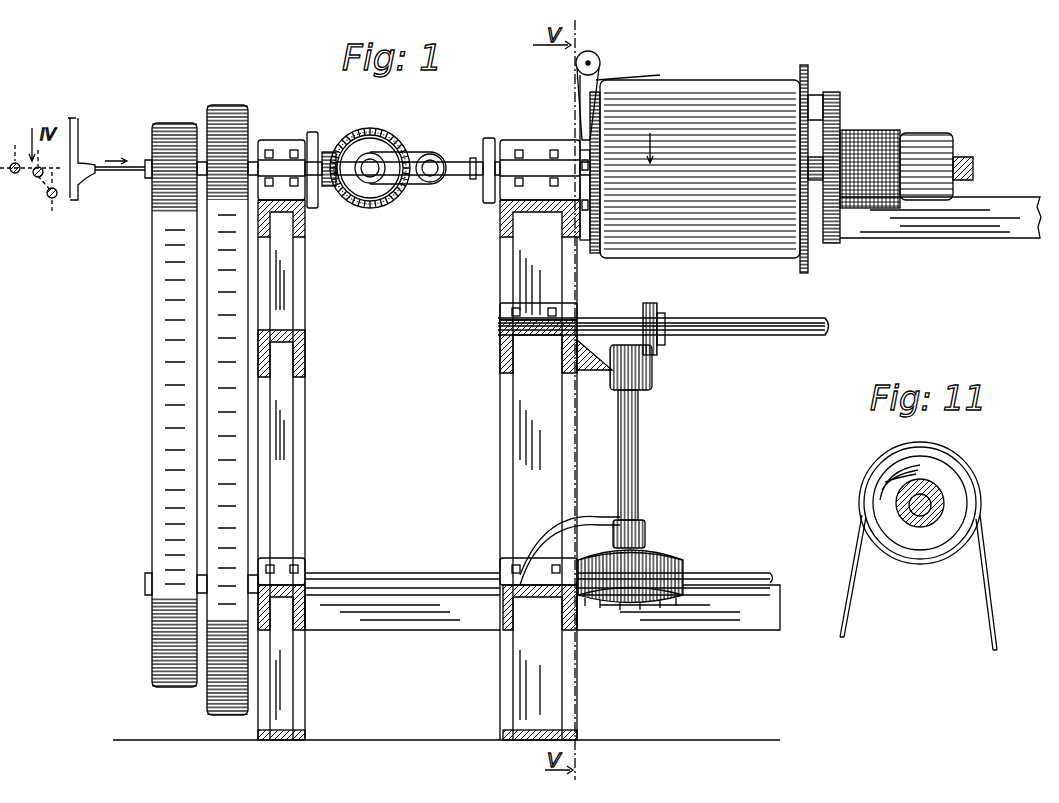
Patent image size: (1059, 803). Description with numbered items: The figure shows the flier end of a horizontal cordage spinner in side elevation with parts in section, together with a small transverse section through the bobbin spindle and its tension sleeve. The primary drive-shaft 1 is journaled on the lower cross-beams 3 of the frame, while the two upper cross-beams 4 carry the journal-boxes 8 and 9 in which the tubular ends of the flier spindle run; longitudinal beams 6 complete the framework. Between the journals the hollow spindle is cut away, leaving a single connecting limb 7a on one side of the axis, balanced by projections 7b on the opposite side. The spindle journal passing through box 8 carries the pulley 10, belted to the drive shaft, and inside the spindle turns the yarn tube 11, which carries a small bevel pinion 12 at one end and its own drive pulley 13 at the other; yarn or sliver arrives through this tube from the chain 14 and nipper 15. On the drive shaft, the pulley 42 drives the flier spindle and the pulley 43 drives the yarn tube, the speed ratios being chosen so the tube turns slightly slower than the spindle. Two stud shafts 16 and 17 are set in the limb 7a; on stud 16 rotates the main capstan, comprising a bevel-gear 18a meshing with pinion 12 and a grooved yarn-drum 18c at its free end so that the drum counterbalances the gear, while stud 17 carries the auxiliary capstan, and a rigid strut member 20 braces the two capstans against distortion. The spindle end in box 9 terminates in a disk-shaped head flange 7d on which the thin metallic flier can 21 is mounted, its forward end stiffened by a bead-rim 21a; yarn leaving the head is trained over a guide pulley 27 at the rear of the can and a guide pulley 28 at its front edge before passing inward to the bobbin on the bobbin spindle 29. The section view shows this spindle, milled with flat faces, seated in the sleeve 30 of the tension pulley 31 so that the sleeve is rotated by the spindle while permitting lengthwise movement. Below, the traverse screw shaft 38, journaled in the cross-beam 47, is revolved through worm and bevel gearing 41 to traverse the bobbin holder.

In FIG. 1, the primary drive-shaft 1 is at (360, 575).
In FIG. 1, the lower cross-beams 3 is at (305, 625).
In FIG. 1, the upper cross-beams 4 is at (303, 240).
In FIG. 1, the longitudinal beams 6 is at (1003, 238).
In FIG. 1, the connecting limb 7a is at (466, 174).
In FIG. 1, the projections 7b is at (312, 135).
In FIG. 1, the head flange 7d is at (593, 253).
In FIG. 1, the journal-box 8 is at (280, 148).
In FIG. 1, the journal-box 9 is at (537, 150).
In FIG. 1, the pulley 10 is at (235, 108).
In FIG. 1, the yarn tube 11 is at (143, 178).
In FIG. 1, the bevel pinion 12 is at (333, 190).
In FIG. 1, the drive pulley 13 is at (152, 128).
In FIG. 1, the chain 14 is at (52, 205).
In FIG. 1, the nipper 15 is at (80, 163).
In FIG. 1, the stud shaft 16 is at (368, 178).
In FIG. 1, the stud shaft 17 is at (432, 180).
In FIG. 1, the bevel-gear 18a is at (395, 200).
In FIG. 1, the grooved yarn-drum 18c is at (370, 140).
In FIG. 1, the strut member 20 is at (408, 168).
In FIG. 1, the flier can 21 is at (737, 80).
In FIG. 1, the bead-rim 21a is at (808, 262).
In FIG. 1, the guide pulley 27 is at (596, 54).
In FIG. 1, the guide pulley 28 is at (840, 100).
In FIG. 1, the bobbin spindle 29 is at (965, 170).
In FIG. 11, the bobbin spindle 29 is at (935, 500).
In FIG. 11, the sleeve 30 is at (938, 508).
In FIG. 11, the tension pulley 31 is at (965, 517).
In FIG. 1, the traverse screw shaft 38 is at (765, 337).
In FIG. 1, the worm and bevel gearing 41 is at (638, 412).
In FIG. 1, the pulley 42 is at (222, 716).
In FIG. 1, the pulley 43 is at (152, 660).
In FIG. 1, the cross-beam 47 is at (500, 365).